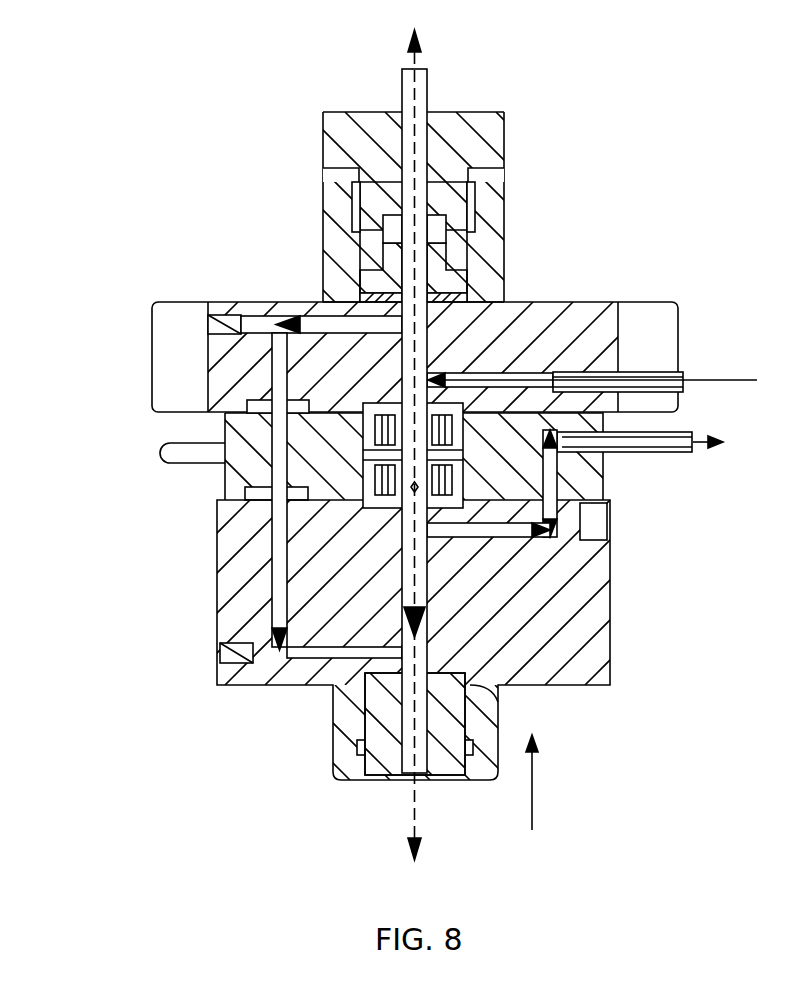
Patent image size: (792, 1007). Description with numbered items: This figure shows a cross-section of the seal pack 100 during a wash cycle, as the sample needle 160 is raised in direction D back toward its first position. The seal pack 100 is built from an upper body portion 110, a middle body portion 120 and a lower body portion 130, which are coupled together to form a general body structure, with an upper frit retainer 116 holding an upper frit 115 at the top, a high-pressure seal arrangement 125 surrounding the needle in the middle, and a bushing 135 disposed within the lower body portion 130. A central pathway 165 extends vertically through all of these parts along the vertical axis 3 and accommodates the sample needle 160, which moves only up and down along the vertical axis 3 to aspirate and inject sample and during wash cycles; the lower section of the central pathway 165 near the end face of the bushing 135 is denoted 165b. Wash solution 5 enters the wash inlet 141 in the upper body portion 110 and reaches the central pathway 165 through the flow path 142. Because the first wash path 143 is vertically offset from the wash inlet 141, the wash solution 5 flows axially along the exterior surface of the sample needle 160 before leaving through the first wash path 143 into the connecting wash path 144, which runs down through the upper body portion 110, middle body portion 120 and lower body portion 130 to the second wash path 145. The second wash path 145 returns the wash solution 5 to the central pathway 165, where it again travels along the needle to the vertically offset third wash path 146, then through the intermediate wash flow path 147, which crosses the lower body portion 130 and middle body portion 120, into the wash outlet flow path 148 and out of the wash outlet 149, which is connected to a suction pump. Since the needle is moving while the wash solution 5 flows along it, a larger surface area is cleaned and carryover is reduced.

The vertical axis 3 is at (425, 62).
The wash solution 5 is at (748, 378).
The seal pack 100 is at (142, 182).
The upper body portion 110 is at (175, 362).
The upper frit 115 is at (440, 287).
The upper frit retainer 116 is at (495, 138).
The middle body portion 120 is at (232, 437).
The high-pressure seal arrangement 125 is at (350, 448).
The lower body portion 130 is at (225, 603).
The bushing 135 is at (378, 763).
The wash inlet 141 is at (683, 378).
The flow path 142 is at (548, 372).
The first wash path 143 is at (300, 315).
The connecting wash path 144 is at (290, 520).
The second wash path 145 is at (343, 653).
The third wash path 146 is at (508, 538).
The intermediate wash flow path 147 is at (560, 480).
The wash outlet flow path 148 is at (670, 455).
The wash outlet 149 is at (695, 440).
The sample needle 160 is at (452, 298).
The central pathway 165 is at (302, 612).
The seal 165b is at (492, 690).